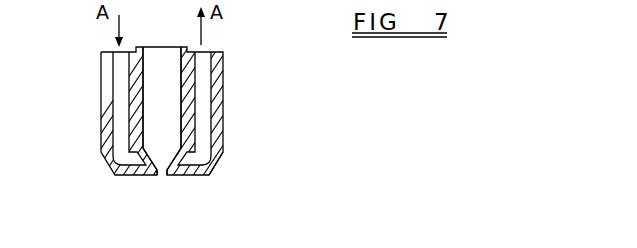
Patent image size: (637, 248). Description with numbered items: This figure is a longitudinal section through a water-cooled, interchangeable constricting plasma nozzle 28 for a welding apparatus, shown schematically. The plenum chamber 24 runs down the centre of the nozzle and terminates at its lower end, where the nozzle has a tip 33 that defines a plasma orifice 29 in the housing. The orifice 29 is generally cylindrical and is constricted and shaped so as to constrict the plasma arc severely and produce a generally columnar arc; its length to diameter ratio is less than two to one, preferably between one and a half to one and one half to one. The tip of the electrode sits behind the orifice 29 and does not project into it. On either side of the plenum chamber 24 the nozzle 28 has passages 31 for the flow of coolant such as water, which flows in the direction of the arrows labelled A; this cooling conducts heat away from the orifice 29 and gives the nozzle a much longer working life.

The plenum chamber 24 is at (155, 108).
The plasma nozzle 28 is at (222, 86).
The plasma orifice 29 is at (163, 176).
The passages 31 is at (205, 108).
The tip 33 is at (230, 158).